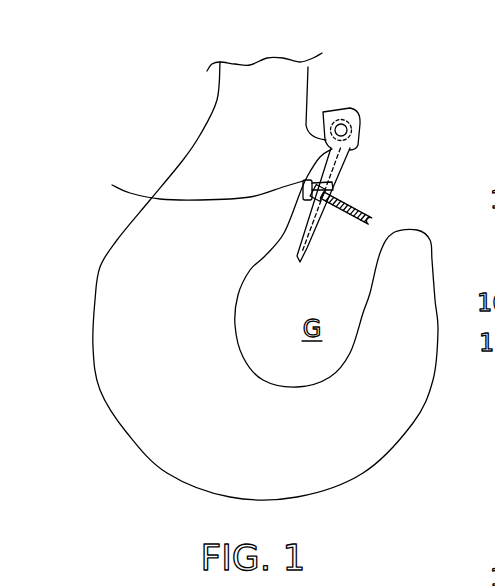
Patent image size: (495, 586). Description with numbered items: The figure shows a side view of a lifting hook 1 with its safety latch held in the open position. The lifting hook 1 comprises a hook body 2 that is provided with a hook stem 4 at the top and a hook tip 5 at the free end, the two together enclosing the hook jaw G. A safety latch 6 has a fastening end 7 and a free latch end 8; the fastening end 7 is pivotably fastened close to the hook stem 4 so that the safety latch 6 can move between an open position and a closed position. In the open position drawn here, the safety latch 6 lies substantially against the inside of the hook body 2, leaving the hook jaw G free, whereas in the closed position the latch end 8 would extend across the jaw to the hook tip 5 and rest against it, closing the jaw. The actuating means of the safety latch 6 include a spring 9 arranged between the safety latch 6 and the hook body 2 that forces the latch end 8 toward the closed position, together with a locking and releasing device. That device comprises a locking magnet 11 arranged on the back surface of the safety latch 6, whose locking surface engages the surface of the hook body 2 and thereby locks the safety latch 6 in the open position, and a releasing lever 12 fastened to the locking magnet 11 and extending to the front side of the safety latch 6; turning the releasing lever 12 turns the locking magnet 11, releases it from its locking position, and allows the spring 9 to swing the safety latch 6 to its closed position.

The lifting hook 1 is at (152, 156).
The hook body 2 is at (96, 266).
The hook stem 4 is at (217, 100).
The hook tip 5 is at (421, 236).
The safety latch 6 is at (346, 190).
The fastening end 7 is at (338, 113).
The latch end 8 is at (306, 249).
The spring 9 is at (325, 112).
The locking magnet 11 is at (195, 179).
The releasing lever 12 is at (362, 206).